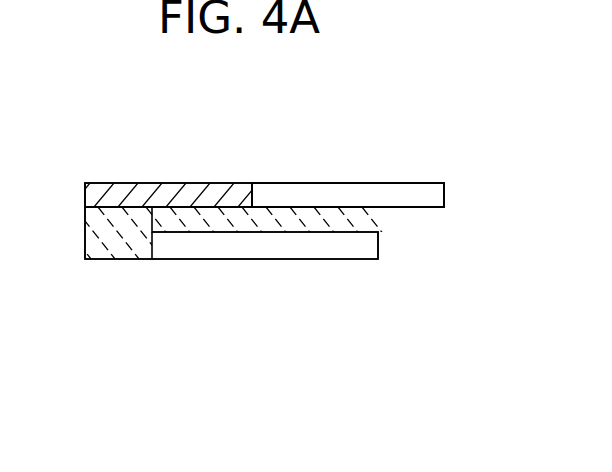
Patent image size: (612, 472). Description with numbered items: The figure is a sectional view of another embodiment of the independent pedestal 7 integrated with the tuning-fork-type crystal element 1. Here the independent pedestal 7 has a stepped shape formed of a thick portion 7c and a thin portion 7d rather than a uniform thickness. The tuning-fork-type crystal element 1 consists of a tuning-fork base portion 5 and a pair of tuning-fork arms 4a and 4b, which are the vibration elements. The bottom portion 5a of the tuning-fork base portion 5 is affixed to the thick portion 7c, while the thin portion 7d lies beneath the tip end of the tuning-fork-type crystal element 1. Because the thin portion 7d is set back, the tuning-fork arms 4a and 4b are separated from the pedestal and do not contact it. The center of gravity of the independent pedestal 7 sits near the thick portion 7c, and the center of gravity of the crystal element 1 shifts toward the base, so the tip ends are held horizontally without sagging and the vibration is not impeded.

The tuning-fork-type crystal element 1 is at (308, 157).
The tuning-fork base portion 5 is at (208, 176).
The bottom portion of the tuning-fork base portion 5a is at (117, 183).
The tuning-fork arm 4a is at (437, 160).
The tuning-fork arm 4b is at (348, 195).
The independent pedestal 7 is at (221, 270).
The thick portion 7c is at (107, 247).
The thin portion 7d is at (337, 253).